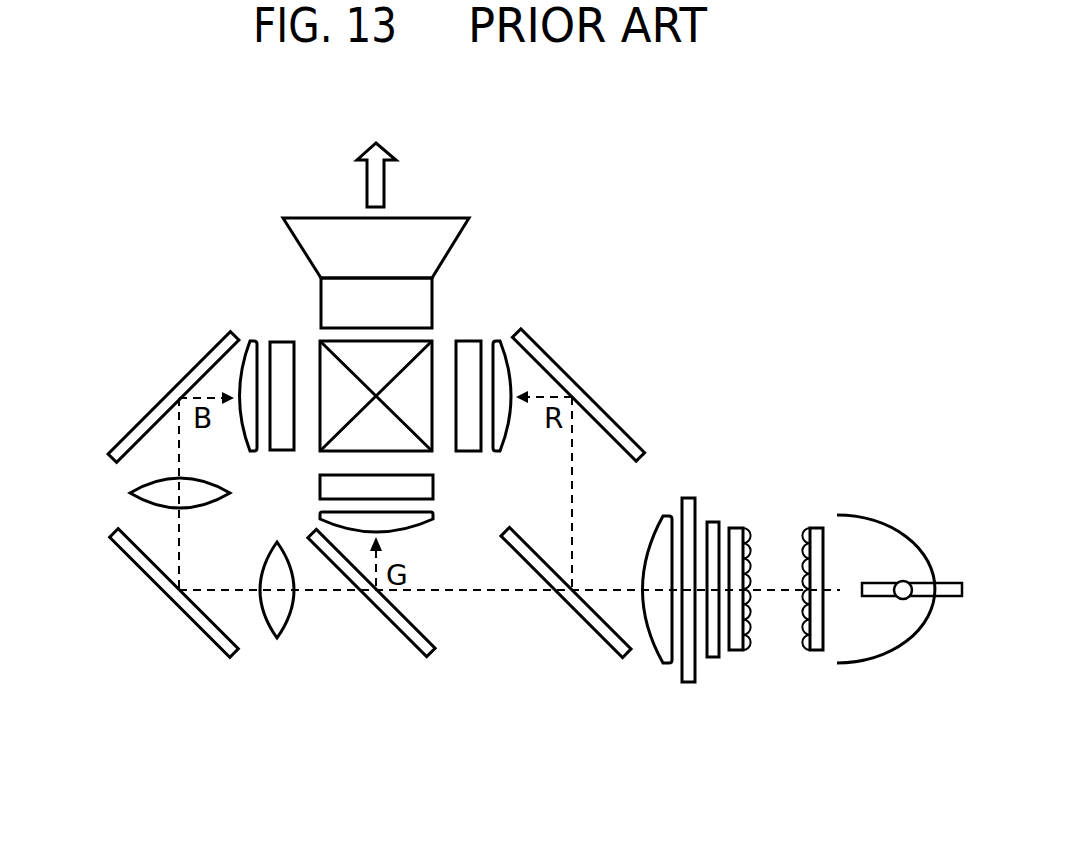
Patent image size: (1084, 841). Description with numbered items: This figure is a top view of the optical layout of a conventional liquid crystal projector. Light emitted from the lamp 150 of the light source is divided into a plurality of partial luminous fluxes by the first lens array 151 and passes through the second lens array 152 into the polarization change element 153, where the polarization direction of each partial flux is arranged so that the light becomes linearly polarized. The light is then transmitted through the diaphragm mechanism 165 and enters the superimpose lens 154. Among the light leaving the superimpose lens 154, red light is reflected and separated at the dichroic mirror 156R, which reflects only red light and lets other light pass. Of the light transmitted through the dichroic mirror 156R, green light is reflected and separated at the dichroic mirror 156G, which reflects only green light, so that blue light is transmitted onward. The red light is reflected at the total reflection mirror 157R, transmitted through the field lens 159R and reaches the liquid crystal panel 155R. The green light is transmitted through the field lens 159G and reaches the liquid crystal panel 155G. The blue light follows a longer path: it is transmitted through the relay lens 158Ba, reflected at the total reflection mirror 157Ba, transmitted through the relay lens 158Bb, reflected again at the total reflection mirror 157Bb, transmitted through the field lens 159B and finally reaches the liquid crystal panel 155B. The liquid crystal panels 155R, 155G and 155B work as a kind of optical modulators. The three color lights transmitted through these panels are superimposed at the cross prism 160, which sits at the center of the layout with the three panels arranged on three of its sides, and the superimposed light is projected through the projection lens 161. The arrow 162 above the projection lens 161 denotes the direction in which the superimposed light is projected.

The lamp 150 is at (877, 658).
The first lens array 151 is at (812, 648).
The second lens array 152 is at (738, 650).
The polarization change element 153 is at (713, 657).
The diaphragm mechanism 165 is at (680, 680).
The superimpose lens 154 is at (652, 648).
The dichroic mirror 156R is at (582, 620).
The dichroic mirror 156G is at (383, 620).
The total reflection mirror 157Ba is at (195, 627).
The total reflection mirror 157Bb is at (143, 412).
The relay lens 158Ba is at (270, 638).
The relay lens 158Bb is at (133, 487).
The field lens 159B is at (245, 343).
The liquid crystal panel 155B is at (280, 343).
The cross prism 160 is at (432, 341).
The liquid crystal panel 155R is at (470, 341).
The field lens 159R is at (502, 341).
The total reflection mirror 157R is at (560, 362).
The liquid crystal panel 155G is at (433, 488).
The field lens 159G is at (433, 513).
The projection lens 161 is at (315, 218).
The arrow 162 is at (387, 152).